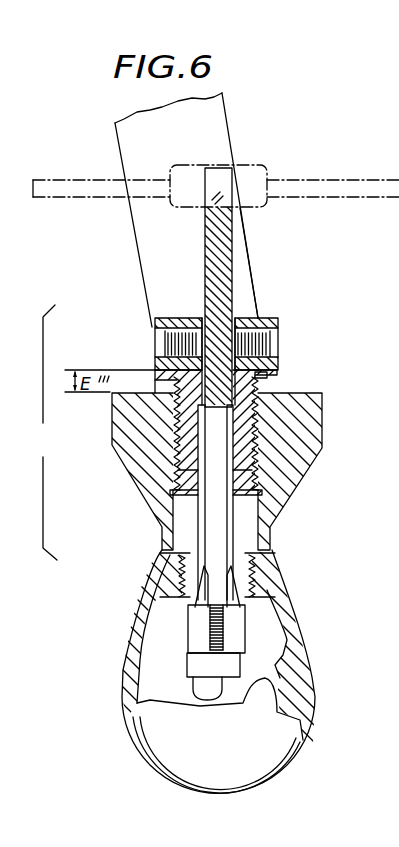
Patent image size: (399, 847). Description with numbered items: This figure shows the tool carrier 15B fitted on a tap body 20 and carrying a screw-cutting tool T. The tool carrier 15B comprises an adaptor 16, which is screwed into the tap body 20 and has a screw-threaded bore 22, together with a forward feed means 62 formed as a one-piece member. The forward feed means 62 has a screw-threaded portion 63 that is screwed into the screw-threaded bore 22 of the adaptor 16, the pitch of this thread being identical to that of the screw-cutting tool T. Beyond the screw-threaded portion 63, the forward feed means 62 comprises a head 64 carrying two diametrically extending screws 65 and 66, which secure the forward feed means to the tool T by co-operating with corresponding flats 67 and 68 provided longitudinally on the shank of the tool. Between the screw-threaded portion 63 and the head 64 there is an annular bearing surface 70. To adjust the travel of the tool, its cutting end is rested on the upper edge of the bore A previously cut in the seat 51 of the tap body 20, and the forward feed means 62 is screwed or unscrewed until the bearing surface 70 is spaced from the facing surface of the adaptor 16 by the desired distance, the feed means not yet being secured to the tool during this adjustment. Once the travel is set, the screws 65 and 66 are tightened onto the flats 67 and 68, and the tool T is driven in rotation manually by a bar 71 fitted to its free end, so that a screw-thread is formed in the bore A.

The bar 71 is at (331, 177).
The screw-cutting tool T is at (238, 245).
The flat 67 is at (233, 280).
The flat 68 is at (205, 267).
The forward feed means 62 is at (160, 306).
The head 64 is at (273, 320).
The screw 66 is at (170, 345).
The screw 65 is at (270, 345).
The annular bearing surface 70 is at (273, 372).
The screw-threaded portion 63 is at (263, 387).
The screw-threaded bore 22 is at (257, 487).
The adaptor 16 is at (332, 441).
The tap body 20 is at (132, 622).
The seat 51 is at (173, 653).
The bore A is at (255, 665).
The tool carrier 15B is at (42, 432).